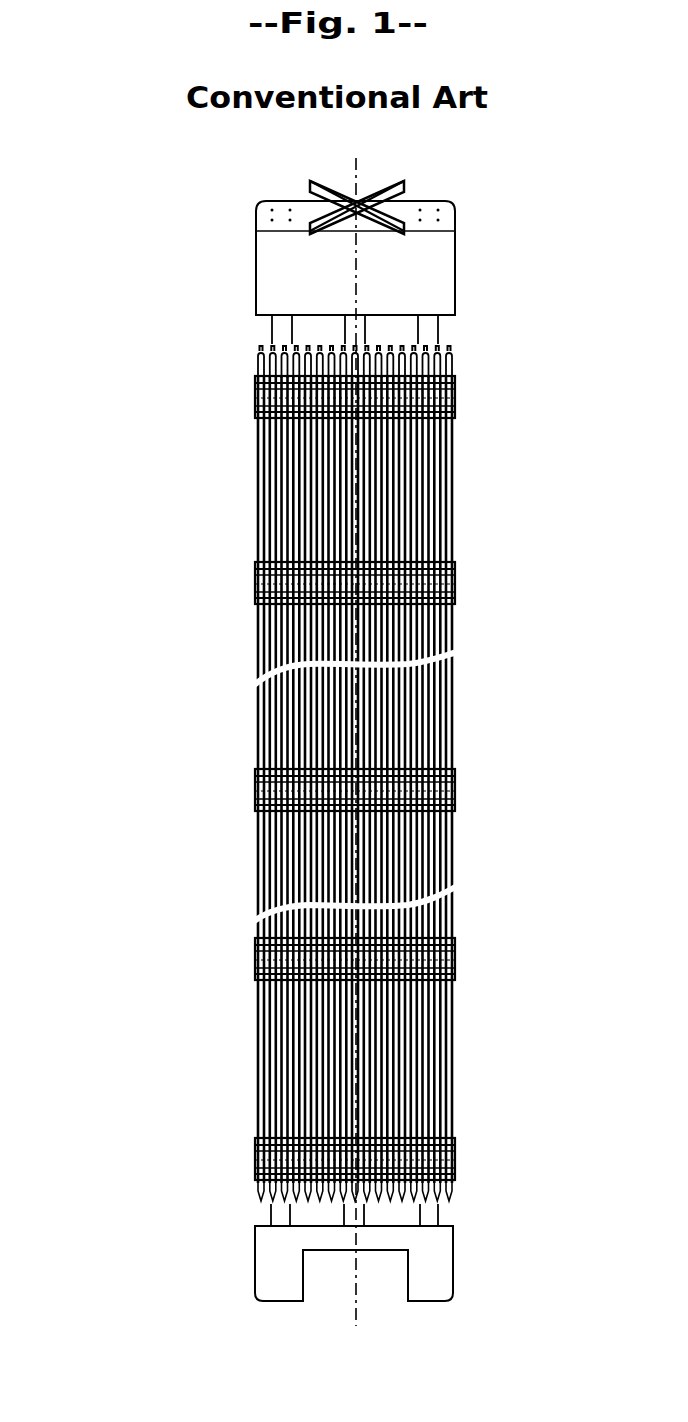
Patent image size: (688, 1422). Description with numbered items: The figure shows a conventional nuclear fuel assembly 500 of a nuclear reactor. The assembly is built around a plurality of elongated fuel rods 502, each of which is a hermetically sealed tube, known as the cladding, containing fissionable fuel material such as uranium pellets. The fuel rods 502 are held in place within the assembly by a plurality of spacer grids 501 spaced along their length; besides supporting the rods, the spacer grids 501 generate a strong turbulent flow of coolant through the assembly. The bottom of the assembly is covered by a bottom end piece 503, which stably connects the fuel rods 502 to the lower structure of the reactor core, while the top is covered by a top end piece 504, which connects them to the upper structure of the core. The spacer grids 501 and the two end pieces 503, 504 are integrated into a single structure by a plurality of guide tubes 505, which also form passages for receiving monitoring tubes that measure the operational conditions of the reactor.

The nuclear fuel assembly 500 is at (304, 742).
The spacer grids 501 is at (445, 775).
The fuel rods 502 is at (444, 512).
The bottom end piece 503 is at (262, 1233).
The top end piece 504 is at (437, 293).
The guide tubes 505 is at (273, 322).